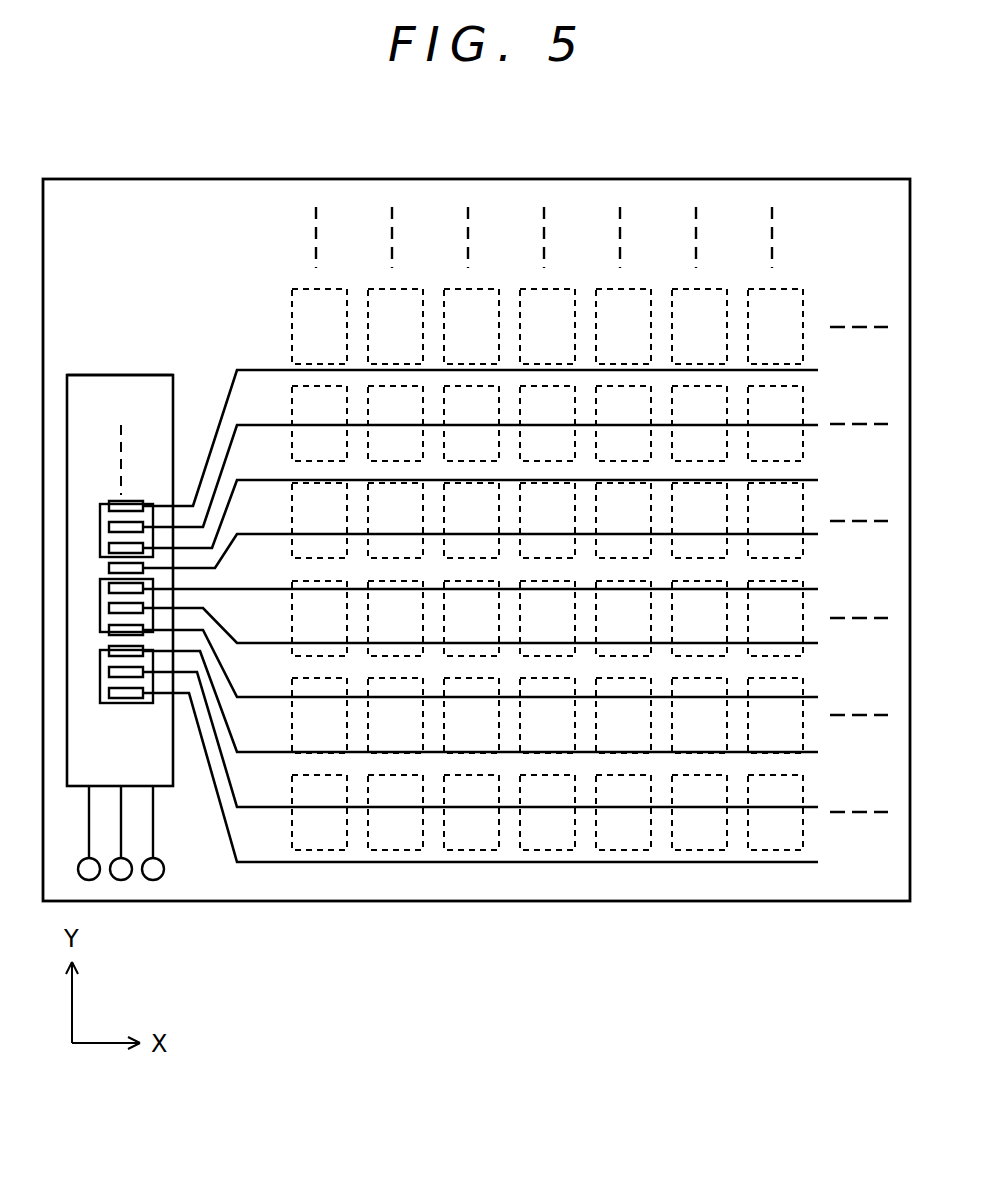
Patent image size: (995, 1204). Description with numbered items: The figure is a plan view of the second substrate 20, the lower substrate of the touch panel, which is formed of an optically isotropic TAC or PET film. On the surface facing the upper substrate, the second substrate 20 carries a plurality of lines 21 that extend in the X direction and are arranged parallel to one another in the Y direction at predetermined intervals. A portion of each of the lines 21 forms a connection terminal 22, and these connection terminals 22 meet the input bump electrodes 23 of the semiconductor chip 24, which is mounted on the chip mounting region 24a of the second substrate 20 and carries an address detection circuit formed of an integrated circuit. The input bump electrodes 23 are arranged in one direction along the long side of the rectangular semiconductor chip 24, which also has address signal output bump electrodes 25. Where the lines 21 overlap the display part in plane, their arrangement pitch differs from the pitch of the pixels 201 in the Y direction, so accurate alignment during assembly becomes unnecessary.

The second substrate 20 is at (745, 179).
The pixels 201 is at (542, 300).
The lines 21 is at (258, 362).
The connection terminals 22 is at (129, 705).
The input bump electrodes 23 is at (103, 512).
The semiconductor chip 24 is at (82, 375).
The chip mounting region 24a is at (163, 372).
The address signal output bump electrodes 25 is at (121, 880).